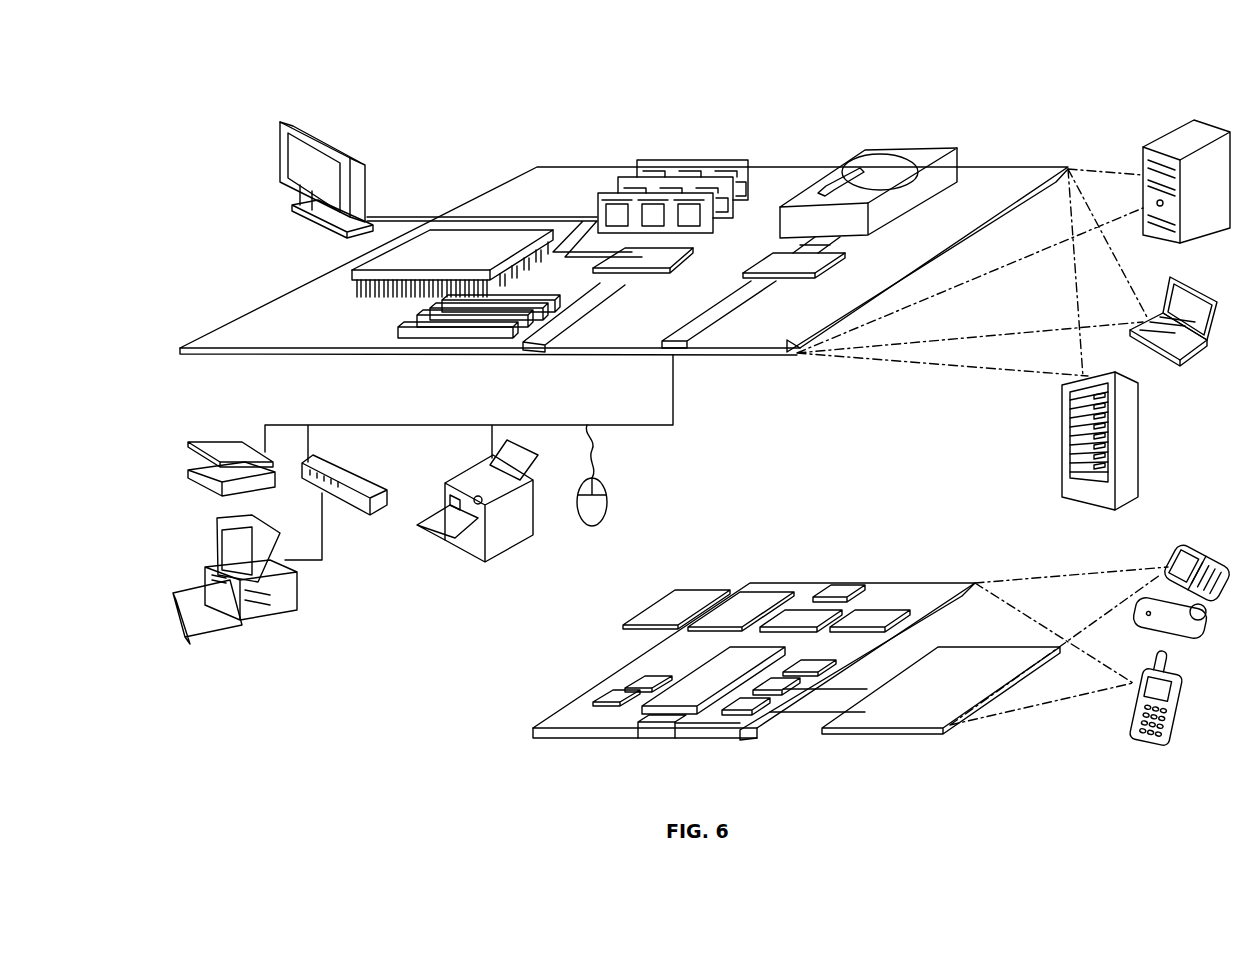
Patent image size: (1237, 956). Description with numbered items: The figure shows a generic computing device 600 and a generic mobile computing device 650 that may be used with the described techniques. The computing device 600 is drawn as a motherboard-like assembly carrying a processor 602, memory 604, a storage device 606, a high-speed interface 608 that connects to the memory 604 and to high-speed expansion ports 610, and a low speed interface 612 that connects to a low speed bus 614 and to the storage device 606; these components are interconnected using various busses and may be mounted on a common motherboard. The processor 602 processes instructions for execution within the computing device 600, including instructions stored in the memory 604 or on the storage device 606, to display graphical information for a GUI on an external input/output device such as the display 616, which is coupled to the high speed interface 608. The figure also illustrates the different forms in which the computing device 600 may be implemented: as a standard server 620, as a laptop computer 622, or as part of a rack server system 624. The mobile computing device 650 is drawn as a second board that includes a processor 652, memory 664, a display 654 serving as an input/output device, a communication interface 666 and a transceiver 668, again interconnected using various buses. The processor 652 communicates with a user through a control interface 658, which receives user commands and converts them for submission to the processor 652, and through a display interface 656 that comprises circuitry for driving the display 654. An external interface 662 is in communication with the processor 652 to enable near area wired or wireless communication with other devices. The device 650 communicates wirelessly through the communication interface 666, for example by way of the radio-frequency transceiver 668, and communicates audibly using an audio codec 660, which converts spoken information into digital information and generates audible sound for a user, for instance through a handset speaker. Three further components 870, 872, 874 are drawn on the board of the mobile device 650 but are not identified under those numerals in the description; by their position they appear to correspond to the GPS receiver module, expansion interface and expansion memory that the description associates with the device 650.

The computing device 600 is at (287, 44).
The processor 602 is at (352, 273).
The memory 604 is at (672, 163).
The storage device 606 is at (862, 152).
The high-speed interface 608 is at (635, 270).
The high-speed expansion ports 610 is at (425, 325).
The low speed interface 612 is at (775, 265).
The low speed bus 614 is at (680, 357).
The display 616 is at (286, 122).
The standard server 620 is at (1141, 163).
The laptop computer 622 is at (1206, 293).
The rack server system 624 is at (1061, 442).
The mobile computer device 650 is at (513, 774).
The processor 652 is at (690, 688).
The display 654 is at (890, 718).
The display interface 656 is at (738, 717).
The control interface 658 is at (770, 697).
The audio codec 660 is at (828, 656).
The external interface 662 is at (658, 737).
The memory 664 is at (615, 691).
The communication interface 666 is at (795, 612).
The transceiver 668 is at (870, 620).
The sensor module 870 is at (846, 586).
The controller module 872 is at (736, 596).
The power module 874 is at (668, 598).